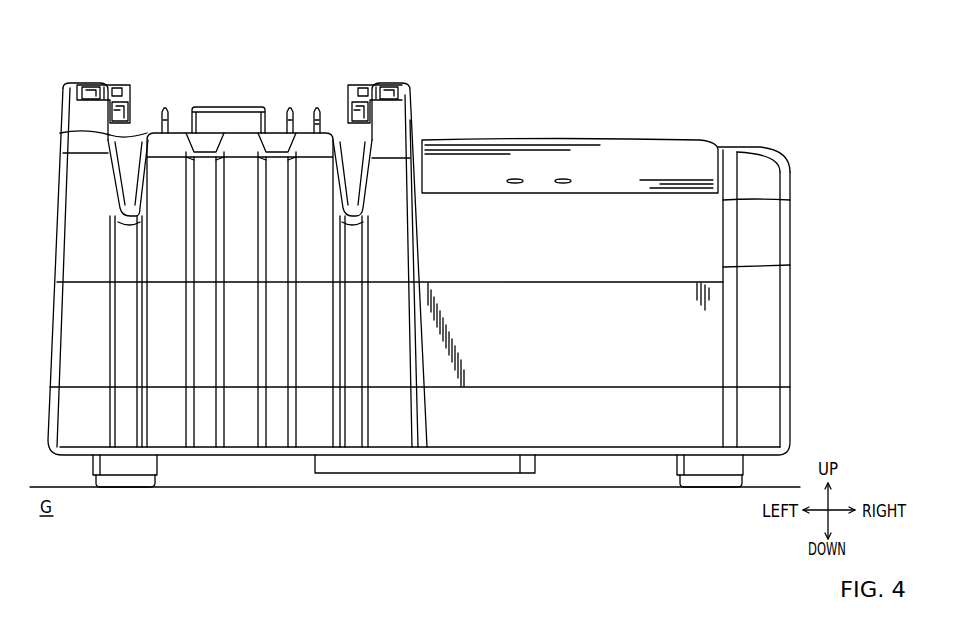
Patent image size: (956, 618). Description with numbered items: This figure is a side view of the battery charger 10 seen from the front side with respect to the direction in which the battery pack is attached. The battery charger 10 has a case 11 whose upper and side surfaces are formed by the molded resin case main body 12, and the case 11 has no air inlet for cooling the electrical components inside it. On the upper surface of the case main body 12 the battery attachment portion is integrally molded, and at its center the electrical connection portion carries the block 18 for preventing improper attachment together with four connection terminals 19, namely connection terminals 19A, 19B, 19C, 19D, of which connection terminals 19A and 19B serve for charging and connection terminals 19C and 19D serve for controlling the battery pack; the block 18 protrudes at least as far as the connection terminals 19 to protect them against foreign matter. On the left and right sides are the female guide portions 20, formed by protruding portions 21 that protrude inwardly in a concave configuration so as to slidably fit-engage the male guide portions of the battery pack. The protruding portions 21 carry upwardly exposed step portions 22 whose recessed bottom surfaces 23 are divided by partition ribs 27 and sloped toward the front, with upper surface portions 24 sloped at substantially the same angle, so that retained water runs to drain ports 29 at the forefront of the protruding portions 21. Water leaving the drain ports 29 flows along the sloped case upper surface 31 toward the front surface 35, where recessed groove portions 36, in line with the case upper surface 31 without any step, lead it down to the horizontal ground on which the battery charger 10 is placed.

The battery charger 10 is at (739, 82).
The case 11 is at (837, 362).
The case main body 12 is at (782, 352).
The block 18 is at (217, 118).
The connection terminals 19 is at (241, 98).
The connection terminal 19A is at (167, 110).
The connection terminal 19B is at (316, 108).
The connection terminal 19C is at (289, 110).
The connection terminal 19D is at (316, 110).
The female guide portions 20 is at (103, 104).
The protruding portions 21 is at (421, 77).
The exposed step portions 22 is at (240, 93).
The bottom surfaces 23 is at (113, 92).
The upper surface portions 24 is at (66, 95).
The partition ribs 27 is at (116, 92).
The drain ports 29 is at (350, 105).
The case upper surface 31 is at (62, 133).
The front surface 35 is at (128, 325).
The recessed groove portions 36 is at (130, 240).